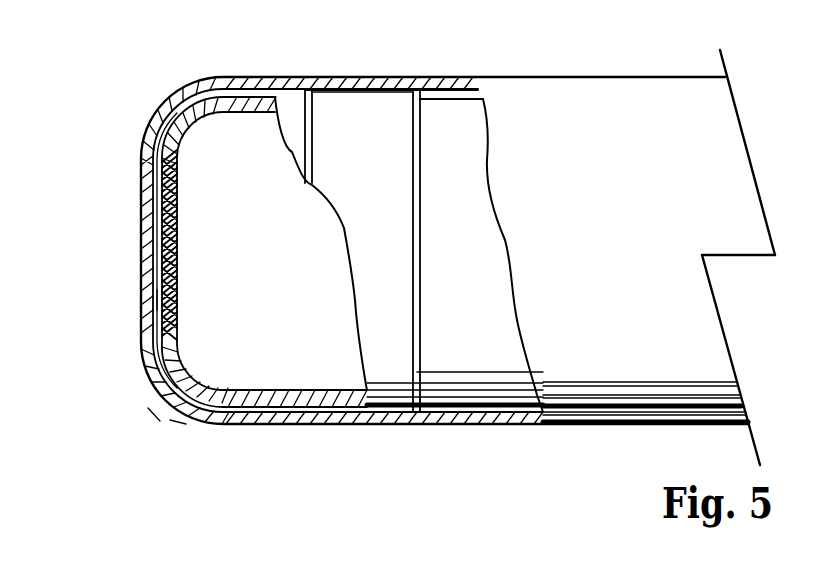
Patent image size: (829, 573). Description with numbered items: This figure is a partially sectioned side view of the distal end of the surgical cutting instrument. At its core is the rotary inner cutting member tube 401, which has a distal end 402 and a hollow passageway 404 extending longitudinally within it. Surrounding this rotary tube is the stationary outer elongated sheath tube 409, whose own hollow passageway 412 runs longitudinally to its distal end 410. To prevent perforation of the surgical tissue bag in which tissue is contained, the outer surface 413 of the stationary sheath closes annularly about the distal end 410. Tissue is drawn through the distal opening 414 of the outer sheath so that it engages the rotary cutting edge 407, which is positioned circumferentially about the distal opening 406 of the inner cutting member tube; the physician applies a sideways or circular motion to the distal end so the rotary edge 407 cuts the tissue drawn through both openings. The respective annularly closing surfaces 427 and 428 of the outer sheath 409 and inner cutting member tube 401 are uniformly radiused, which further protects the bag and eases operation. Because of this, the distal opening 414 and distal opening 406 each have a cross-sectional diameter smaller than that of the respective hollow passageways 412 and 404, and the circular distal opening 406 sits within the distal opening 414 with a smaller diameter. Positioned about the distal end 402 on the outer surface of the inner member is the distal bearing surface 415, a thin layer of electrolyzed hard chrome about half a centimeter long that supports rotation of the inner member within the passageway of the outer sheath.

The inner cutting member tube 401 is at (308, 403).
The distal end 402 is at (178, 422).
The hollow passageway 404 is at (290, 368).
The distal opening 406 is at (158, 297).
The rotary cutting edge 407 is at (165, 190).
The outer elongated sheath tube 409 is at (430, 84).
The distal end 410 is at (155, 418).
The hollow passageway 412 is at (278, 92).
The outer surface 413 is at (447, 427).
The distal opening 414 is at (143, 271).
The distal bearing surface 415 is at (365, 103).
The annularly closing surface 427 is at (172, 98).
The annularly closing surface 428 is at (218, 79).